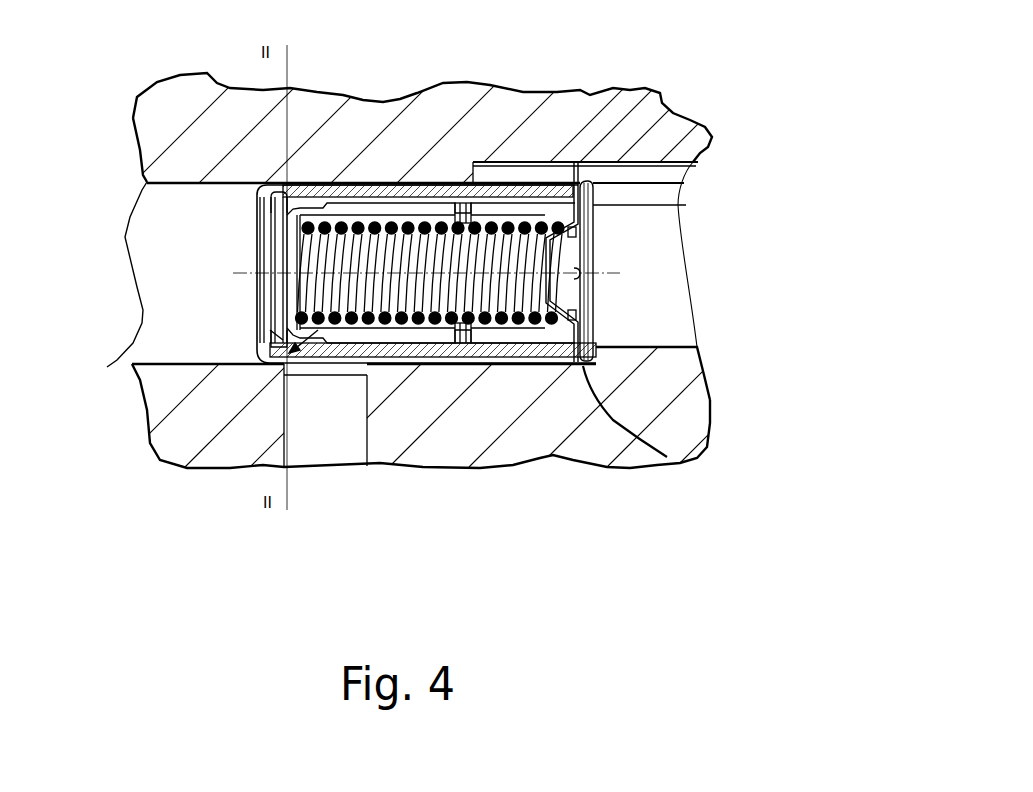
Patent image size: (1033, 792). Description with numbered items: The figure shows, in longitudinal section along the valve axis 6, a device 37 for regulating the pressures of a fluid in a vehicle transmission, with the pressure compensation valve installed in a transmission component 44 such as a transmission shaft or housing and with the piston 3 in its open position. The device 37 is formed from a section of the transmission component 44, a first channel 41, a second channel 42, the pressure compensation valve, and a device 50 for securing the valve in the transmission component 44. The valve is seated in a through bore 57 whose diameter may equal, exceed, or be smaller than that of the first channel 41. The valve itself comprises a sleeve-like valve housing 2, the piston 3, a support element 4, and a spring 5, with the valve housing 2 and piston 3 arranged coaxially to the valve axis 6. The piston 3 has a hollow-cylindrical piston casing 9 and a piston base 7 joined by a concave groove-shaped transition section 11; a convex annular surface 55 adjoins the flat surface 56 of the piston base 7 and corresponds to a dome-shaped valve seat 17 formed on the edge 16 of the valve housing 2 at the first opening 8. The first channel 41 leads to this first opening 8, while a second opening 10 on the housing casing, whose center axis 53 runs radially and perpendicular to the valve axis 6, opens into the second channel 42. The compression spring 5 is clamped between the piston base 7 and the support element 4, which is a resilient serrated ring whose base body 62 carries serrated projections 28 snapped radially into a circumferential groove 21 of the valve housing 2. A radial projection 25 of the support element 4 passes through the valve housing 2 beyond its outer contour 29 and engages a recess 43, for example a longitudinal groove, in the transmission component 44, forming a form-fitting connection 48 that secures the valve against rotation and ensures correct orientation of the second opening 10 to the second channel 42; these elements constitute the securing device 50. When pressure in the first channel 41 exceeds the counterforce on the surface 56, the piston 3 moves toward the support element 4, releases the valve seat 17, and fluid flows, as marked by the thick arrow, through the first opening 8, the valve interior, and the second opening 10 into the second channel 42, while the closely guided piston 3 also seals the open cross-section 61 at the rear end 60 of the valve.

The valve housing 2 is at (502, 364).
The piston 3 is at (355, 198).
The support element 4 is at (572, 214).
The spring 5 is at (580, 366).
The valve axis 6 is at (231, 273).
The piston base 7 is at (255, 246).
The first opening 8 is at (257, 313).
The piston casing 9 is at (466, 356).
The second opening 10 is at (345, 364).
The transition section 11 is at (300, 198).
The edge 16 is at (147, 420).
The valve seat 17 is at (238, 181).
The circumferential groove 21 is at (596, 351).
The projection 25 is at (576, 164).
The serrated projections 28 is at (577, 250).
The outer contour 29 is at (530, 330).
The device for regulating pressures of a fluid 37 is at (690, 67).
The first channel 41 is at (135, 364).
The second channel 42 is at (245, 462).
The recess 43 is at (577, 168).
The transmission component 44 is at (622, 124).
The form-fitting connection 48 is at (642, 165).
The device for securing the pressure compensation valve 50 is at (618, 182).
The center axis 53 is at (328, 382).
The annular surface 55 is at (147, 181).
The surface 56 is at (147, 183).
The through bore 57 is at (667, 274).
The end 60 is at (668, 466).
The open cross-section 61 is at (497, 204).
The base body 62 is at (530, 200).